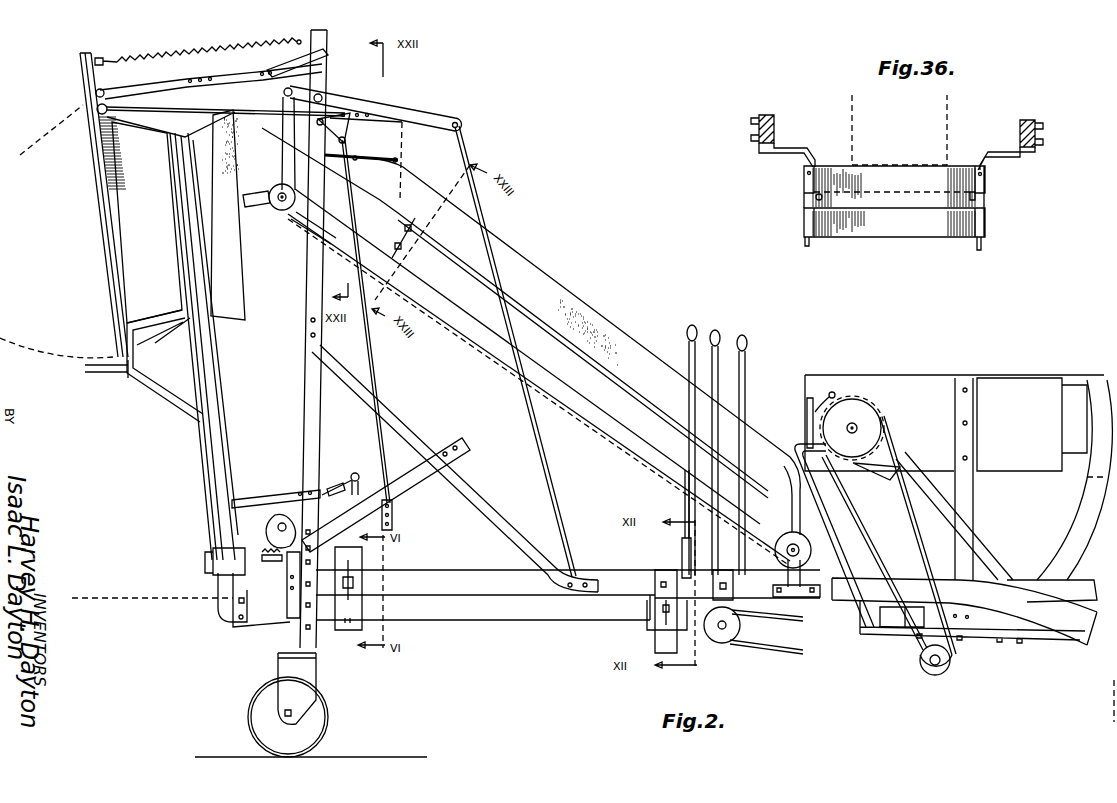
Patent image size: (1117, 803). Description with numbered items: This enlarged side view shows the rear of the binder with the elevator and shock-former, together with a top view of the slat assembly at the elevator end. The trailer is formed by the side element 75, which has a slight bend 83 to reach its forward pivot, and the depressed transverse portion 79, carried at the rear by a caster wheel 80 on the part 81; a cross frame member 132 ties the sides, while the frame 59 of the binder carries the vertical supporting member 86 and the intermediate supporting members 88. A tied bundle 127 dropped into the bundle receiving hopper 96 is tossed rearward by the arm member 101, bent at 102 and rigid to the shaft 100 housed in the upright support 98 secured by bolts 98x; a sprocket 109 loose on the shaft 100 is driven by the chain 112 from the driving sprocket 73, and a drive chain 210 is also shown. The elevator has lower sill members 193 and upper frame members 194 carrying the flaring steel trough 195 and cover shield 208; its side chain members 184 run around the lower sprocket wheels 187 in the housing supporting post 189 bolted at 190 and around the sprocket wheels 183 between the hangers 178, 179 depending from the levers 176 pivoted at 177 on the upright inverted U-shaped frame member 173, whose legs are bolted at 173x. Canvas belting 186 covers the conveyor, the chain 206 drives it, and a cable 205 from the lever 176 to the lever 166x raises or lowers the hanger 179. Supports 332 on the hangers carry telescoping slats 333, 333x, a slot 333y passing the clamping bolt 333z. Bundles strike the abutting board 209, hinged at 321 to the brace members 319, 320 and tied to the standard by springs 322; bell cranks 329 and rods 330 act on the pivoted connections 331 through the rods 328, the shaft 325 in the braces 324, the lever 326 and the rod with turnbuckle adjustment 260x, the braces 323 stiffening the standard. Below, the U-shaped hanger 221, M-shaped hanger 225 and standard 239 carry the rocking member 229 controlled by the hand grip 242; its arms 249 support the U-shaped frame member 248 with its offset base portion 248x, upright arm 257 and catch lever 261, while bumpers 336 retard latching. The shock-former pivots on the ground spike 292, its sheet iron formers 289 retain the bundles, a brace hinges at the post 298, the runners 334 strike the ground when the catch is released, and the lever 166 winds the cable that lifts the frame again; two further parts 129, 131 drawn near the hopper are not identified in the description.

In FIG. 2, the upright inverted U-shaped frame member 173 is at (317, 426).
In FIG. 2, the leg bolting point 173x is at (287, 652).
In FIG. 2, the transverse portion 79 is at (283, 661).
In FIG. 2, the caster wheel part 81 is at (312, 678).
In FIG. 2, the caster wheel 80 is at (316, 719).
In FIG. 2, the springs 322 is at (187, 52).
In FIG. 2, the brace member 320 is at (280, 60).
In FIG. 2, the brace member 319 is at (231, 80).
In FIG. 2, the hinge 321 is at (97, 91).
In FIG. 2, the pivoted connection 331 is at (110, 110).
In FIG. 2, the rods 330 is at (172, 110).
In FIG. 2, the tied bundle of grain 127 is at (97, 160).
In FIG. 2, the sheet iron former 289 is at (178, 216).
In FIG. 2, the hinge post 298 is at (230, 436).
In FIG. 2, the abutting board 209 is at (110, 272).
In FIG. 2, the runners 334 is at (132, 372).
In FIG. 2, the ground spike 292 is at (175, 330).
In FIG. 2, the U-shaped frame member 248 is at (213, 509).
In FIG. 2, the offset base portion 248x is at (230, 537).
In FIG. 2, the arm members 249 is at (218, 589).
In FIG. 2, the side element 75 is at (290, 629).
In FIG. 2, the rocking member 229 is at (483, 607).
In FIG. 2, the rear M-shaped hanger 225 is at (362, 603).
In FIG. 2, the U-shaped hanger 221 is at (660, 638).
In FIG. 2, the standard 239 is at (682, 548).
In FIG. 2, the cross frame member 132 is at (733, 588).
In FIG. 2, the chain 206 is at (742, 618).
In FIG. 2, the lower sprocket wheels 187 is at (812, 548).
In FIG. 2, the housing supporting post 189 is at (800, 573).
In FIG. 2, the bolting point 190 is at (806, 597).
In FIG. 2, the hand grip 242 is at (693, 325).
In FIG. 2, the lever 166x is at (717, 332).
In FIG. 2, the lever 166 is at (746, 372).
In FIG. 2, the flaring steel trough 195 is at (507, 293).
In FIG. 2, the upper frame members 194 is at (547, 333).
In FIG. 2, the lower sill members 193 is at (570, 399).
In FIG. 2, the side chain members 184 is at (573, 425).
In FIG. 2, the cable 205 is at (548, 486).
In FIG. 2, the lever 176 is at (402, 112).
In FIG. 2, the pivot 177 is at (323, 96).
In FIG. 2, the hanger 179 is at (283, 157).
In FIG. 36, the hanger 179 is at (1033, 118).
In FIG. 2, the supports 332 is at (252, 193).
In FIG. 36, the supports 332 is at (785, 152).
In FIG. 2, the slat 333 is at (278, 212).
In FIG. 36, the slat 333 is at (894, 229).
In FIG. 2, the sprocket wheels 183 is at (300, 232).
In FIG. 2, the bell cranks 329 is at (348, 125).
In FIG. 2, the cover shield 208 is at (362, 157).
In FIG. 2, the rods 328 is at (375, 372).
In FIG. 2, the shaft 325 is at (372, 518).
In FIG. 2, the braces 324 is at (400, 485).
In FIG. 2, the lever 326 is at (360, 473).
In FIG. 2, the turnbuckle adjustment 260x is at (330, 487).
In FIG. 2, the bumpers 336 is at (252, 497).
In FIG. 2, the upright arm 257 is at (282, 520).
In FIG. 2, the catch lever 261 is at (284, 523).
In FIG. 2, the braces 323 is at (480, 504).
In FIG. 2, the hook 129 is at (830, 390).
In FIG. 2, the bar 131 is at (807, 412).
In FIG. 2, the horizontal shaft 100 is at (858, 424).
In FIG. 2, the sprocket 109 is at (853, 439).
In FIG. 2, the bundle receiving hopper 96 is at (954, 427).
In FIG. 2, the vertical supporting member 86 is at (974, 502).
In FIG. 2, the intermediate supporting members 88 is at (1074, 480).
In FIG. 2, the bend 102 is at (1023, 548).
In FIG. 2, the upright support 98 is at (840, 522).
In FIG. 2, the bolts 98x is at (1018, 640).
In FIG. 2, the chain 112 is at (868, 553).
In FIG. 2, the driving sprocket 73 is at (952, 662).
In FIG. 2, the bend 83 is at (964, 611).
In FIG. 2, the arm member 101 is at (925, 545).
In FIG. 2, the frame 59 is at (972, 621).
In FIG. 2, the drive chain 210 is at (841, 695).
In FIG. 36, the hanger 178 is at (770, 114).
In FIG. 36, the canvas belting 186 is at (899, 130).
In FIG. 36, the telescoping slat 333x is at (894, 187).
In FIG. 36, the clamping bolt 333z is at (816, 199).
In FIG. 36, the slot 333y is at (975, 196).